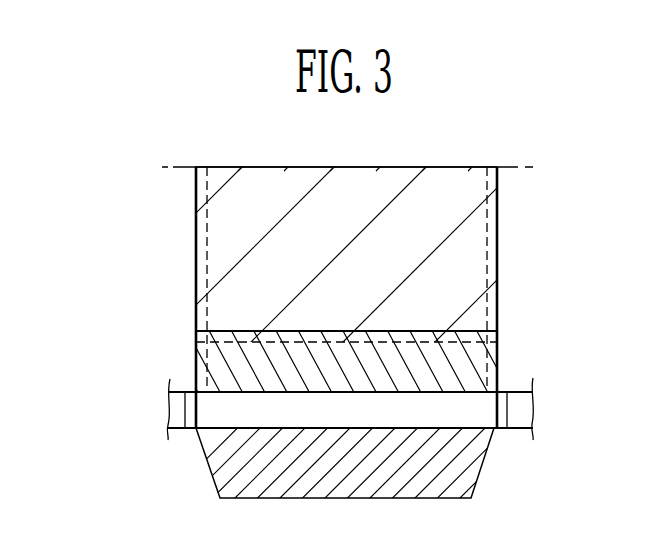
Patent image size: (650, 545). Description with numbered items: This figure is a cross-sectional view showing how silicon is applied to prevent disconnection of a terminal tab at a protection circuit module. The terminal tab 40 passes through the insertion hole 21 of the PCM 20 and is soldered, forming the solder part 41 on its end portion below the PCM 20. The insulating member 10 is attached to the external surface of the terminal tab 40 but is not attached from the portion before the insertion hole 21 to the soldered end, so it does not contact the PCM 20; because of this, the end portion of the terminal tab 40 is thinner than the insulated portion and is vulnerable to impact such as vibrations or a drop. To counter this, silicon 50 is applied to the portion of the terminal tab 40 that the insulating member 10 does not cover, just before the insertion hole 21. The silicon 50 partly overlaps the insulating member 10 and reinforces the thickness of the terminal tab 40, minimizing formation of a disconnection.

The insulating member 10 is at (470, 222).
The PCM 20 is at (177, 410).
The insertion hole 21 is at (189, 429).
The terminal tab 40 is at (492, 295).
The solder part 41 is at (467, 482).
The silicon 50 is at (197, 345).